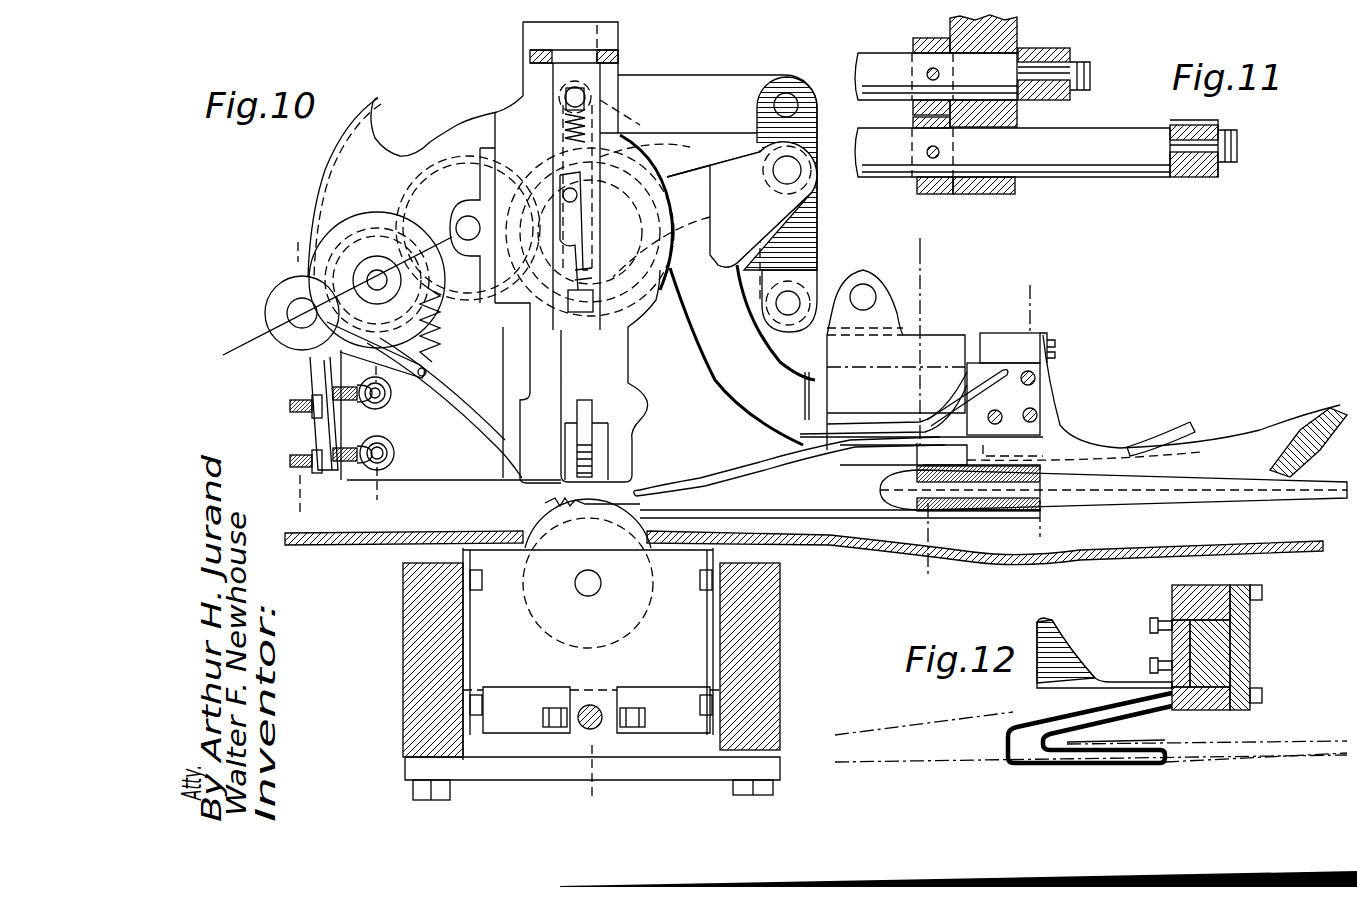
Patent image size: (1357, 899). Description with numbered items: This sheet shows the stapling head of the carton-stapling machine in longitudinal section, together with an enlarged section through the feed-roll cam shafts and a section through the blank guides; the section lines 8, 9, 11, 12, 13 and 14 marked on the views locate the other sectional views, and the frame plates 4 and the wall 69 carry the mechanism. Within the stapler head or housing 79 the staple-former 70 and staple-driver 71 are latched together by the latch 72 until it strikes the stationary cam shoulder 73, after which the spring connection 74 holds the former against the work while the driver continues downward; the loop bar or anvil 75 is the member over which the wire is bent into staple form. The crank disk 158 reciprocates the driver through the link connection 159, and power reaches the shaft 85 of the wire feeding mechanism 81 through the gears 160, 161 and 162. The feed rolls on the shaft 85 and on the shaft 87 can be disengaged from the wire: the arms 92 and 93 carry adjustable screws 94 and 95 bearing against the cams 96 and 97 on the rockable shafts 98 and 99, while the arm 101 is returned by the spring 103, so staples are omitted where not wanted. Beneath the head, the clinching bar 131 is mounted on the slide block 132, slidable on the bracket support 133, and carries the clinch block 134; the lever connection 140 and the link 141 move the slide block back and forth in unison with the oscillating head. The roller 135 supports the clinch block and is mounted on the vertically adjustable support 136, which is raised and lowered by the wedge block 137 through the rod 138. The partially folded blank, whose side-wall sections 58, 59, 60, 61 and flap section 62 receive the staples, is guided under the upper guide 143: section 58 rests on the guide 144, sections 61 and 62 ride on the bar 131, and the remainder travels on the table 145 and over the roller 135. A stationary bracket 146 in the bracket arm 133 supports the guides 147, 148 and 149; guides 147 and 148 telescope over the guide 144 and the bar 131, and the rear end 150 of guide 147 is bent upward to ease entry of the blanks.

In FIG. 10, the side plate 4 is at (418, 632).
In FIG. 10, the section line 8- 8 is at (453, 238).
In FIG. 10, the section line 9- 9 is at (298, 247).
In FIG. 10, the section line 11- 11 is at (376, 370).
In FIG. 10, the section line 12- 12 is at (1032, 290).
In FIG. 10, the section line 13- 13 is at (602, 30).
In FIG. 10, the section line 14- 14 is at (920, 243).
In FIG. 12, the side-wall section 58 is at (1010, 710).
In FIG. 12, the side-wall section 59 is at (905, 765).
In FIG. 12, the side-wall section 60 is at (1240, 765).
In FIG. 12, the side-wall section 61 is at (1213, 742).
In FIG. 12, the flap section 62 is at (1082, 743).
In FIG. 10, the frame plate 69 is at (508, 102).
In FIG. 10, the staple-former 70 is at (598, 358).
In FIG. 10, the staple-driver 71 is at (590, 84).
In FIG. 10, the latch 72 is at (575, 212).
In FIG. 10, the cam shoulder 73 is at (522, 308).
In FIG. 10, the spring connection 74 is at (595, 120).
In FIG. 10, the loop bar or anvil 75 is at (590, 452).
In FIG. 11, the stapler head or housing 79 is at (1010, 190).
In FIG. 10, the wire feeding mechanism 81 is at (322, 262).
In FIG. 10, the shaft 85 is at (372, 285).
In FIG. 10, the shaft 87 is at (300, 312).
In FIG. 10, the arm 92 is at (318, 387).
In FIG. 10, the arm 93 is at (318, 432).
In FIG. 10, the adjustable screw 94 is at (358, 400).
In FIG. 10, the adjustable screw 95 is at (345, 460).
In FIG. 10, the cam 96 is at (392, 398).
In FIG. 11, the cam 96 is at (1045, 55).
In FIG. 10, the cam 97 is at (398, 453).
In FIG. 11, the cam 97 is at (1192, 178).
In FIG. 11, the shaft 98 is at (878, 63).
In FIG. 11, the shaft 99 is at (885, 140).
In FIG. 10, the arm 101 is at (424, 401).
In FIG. 10, the spring 103 is at (432, 340).
In FIG. 10, the bar 131 is at (762, 507).
In FIG. 10, the slide block 132 is at (840, 353).
In FIG. 10, the bracket support 133 is at (808, 402).
In FIG. 12, the bracket support 133 is at (1220, 633).
In FIG. 10, the clinch block 134 is at (552, 500).
In FIG. 10, the roller 135 is at (562, 535).
In FIG. 10, the vertically adjustable support 136 is at (500, 612).
In FIG. 10, the wedge block 137 is at (640, 705).
In FIG. 10, the rod 138 is at (562, 712).
In FIG. 10, the lever connection 140 is at (812, 247).
In FIG. 10, the link 141 is at (728, 82).
In FIG. 10, the upper guide 143 is at (865, 430).
In FIG. 12, the upper guide 143 is at (1105, 680).
In FIG. 10, the guide 144 is at (818, 466).
In FIG. 10, the table 145 is at (905, 552).
In FIG. 10, the stationary bracket 146 is at (997, 343).
In FIG. 12, the stationary bracket 146 is at (1172, 600).
In FIG. 10, the guide 147 is at (1003, 470).
In FIG. 12, the guide 147 is at (1010, 748).
In FIG. 10, the guide 148 is at (1200, 505).
In FIG. 10, the guide 149 is at (1162, 425).
In FIG. 10, the rear end 150 is at (1330, 420).
In FIG. 10, the crank disk 158 is at (715, 150).
In FIG. 10, the link connection 159 is at (660, 127).
In FIG. 10, the gear 160 is at (690, 212).
In FIG. 10, the gear 161 is at (451, 165).
In FIG. 10, the gear 162 is at (377, 240).